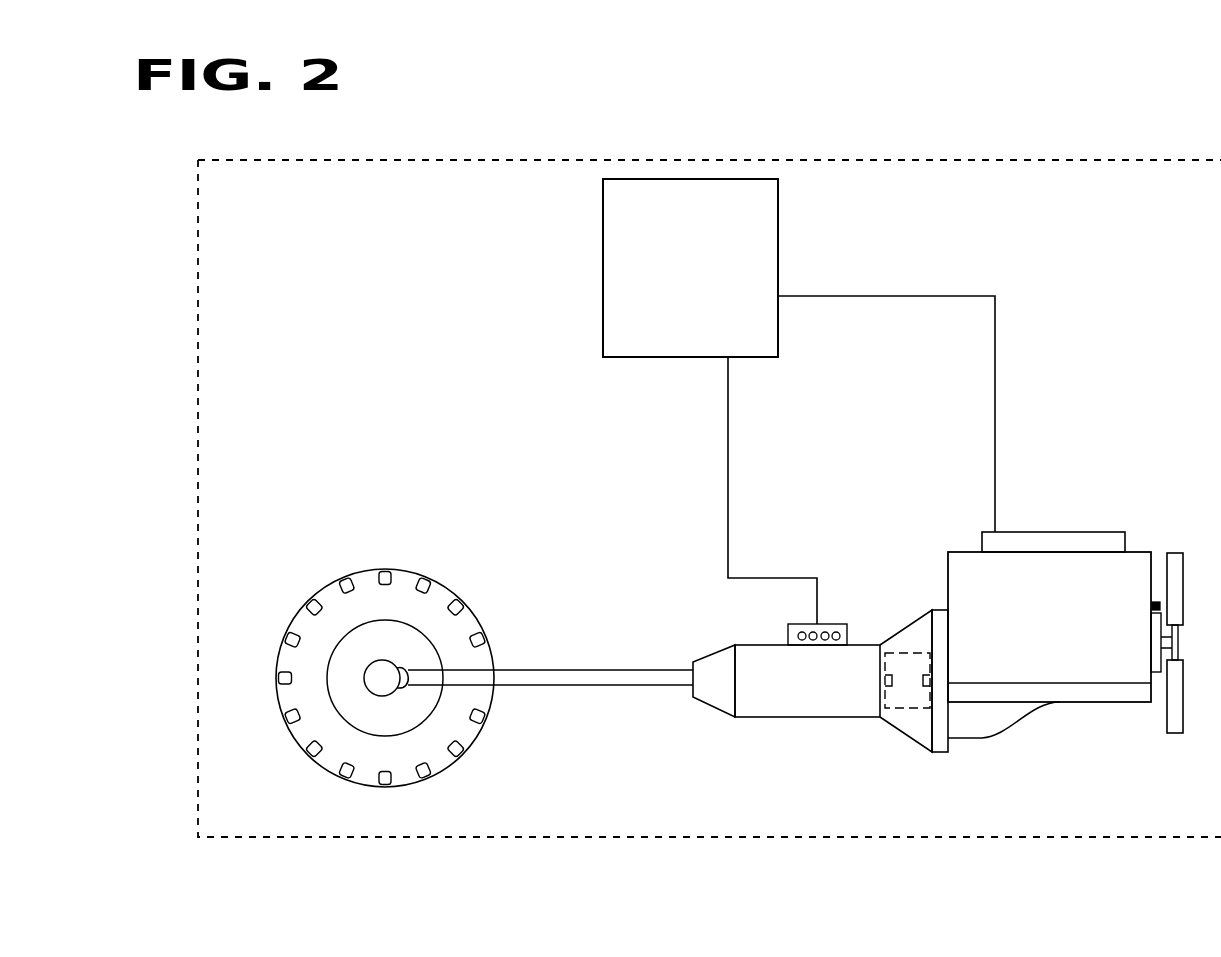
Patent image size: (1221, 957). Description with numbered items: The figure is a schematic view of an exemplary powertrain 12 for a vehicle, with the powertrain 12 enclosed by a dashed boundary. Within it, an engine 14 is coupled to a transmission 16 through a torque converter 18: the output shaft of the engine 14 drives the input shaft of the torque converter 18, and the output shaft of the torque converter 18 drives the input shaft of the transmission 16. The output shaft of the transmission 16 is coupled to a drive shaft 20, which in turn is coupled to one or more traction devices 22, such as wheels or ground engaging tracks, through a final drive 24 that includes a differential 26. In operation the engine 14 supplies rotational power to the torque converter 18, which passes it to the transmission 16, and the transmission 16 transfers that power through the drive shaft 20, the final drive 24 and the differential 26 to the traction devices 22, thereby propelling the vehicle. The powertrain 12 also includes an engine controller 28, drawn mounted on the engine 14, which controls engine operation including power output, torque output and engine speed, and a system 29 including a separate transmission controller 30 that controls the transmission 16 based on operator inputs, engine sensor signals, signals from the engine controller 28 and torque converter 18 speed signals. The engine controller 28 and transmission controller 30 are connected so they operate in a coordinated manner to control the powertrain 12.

The powertrain 12 is at (1110, 160).
The engine 14 is at (1078, 658).
The transmission 16 is at (820, 703).
The torque converter 18 is at (906, 736).
The drive shaft 20 is at (675, 687).
The traction devices 22 is at (328, 598).
The final drive 24 is at (399, 711).
The differential 26 is at (364, 679).
The engine controller 28 is at (1061, 532).
The system 29 is at (638, 168).
The transmission controller 30 is at (724, 190).